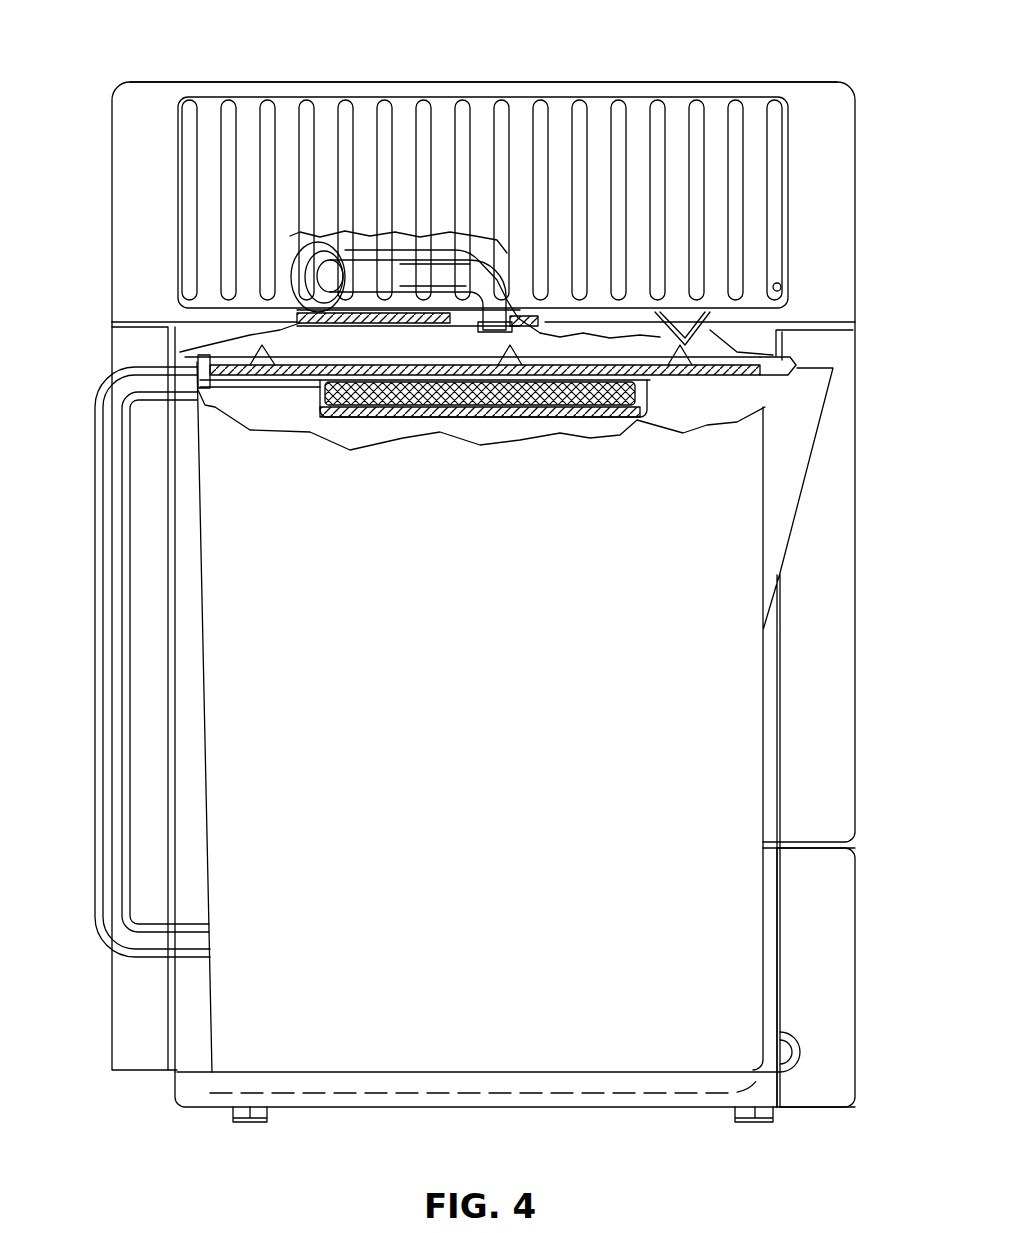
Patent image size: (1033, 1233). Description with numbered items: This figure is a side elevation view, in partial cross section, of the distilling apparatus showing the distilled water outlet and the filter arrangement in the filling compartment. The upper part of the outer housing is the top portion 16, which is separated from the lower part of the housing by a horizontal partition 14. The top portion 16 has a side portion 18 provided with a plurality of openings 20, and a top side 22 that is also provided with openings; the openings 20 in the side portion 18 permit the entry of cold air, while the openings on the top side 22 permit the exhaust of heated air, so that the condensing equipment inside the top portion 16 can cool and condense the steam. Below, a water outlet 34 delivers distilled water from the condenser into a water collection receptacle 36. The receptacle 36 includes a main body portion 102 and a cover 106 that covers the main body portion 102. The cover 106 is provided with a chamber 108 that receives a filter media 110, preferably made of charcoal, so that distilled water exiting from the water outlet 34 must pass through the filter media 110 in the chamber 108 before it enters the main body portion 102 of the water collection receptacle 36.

The horizontal partition 14 is at (280, 334).
The top portion 16 is at (113, 90).
The side portion 18 is at (838, 135).
The openings 20 is at (694, 110).
The top side 22 is at (200, 80).
The water outlet 34 is at (370, 268).
The water collection receptacle 36 is at (750, 553).
The main body portion 102 is at (740, 937).
The cover 106 is at (787, 360).
The chamber 108 is at (645, 416).
The filter media 110 is at (396, 400).